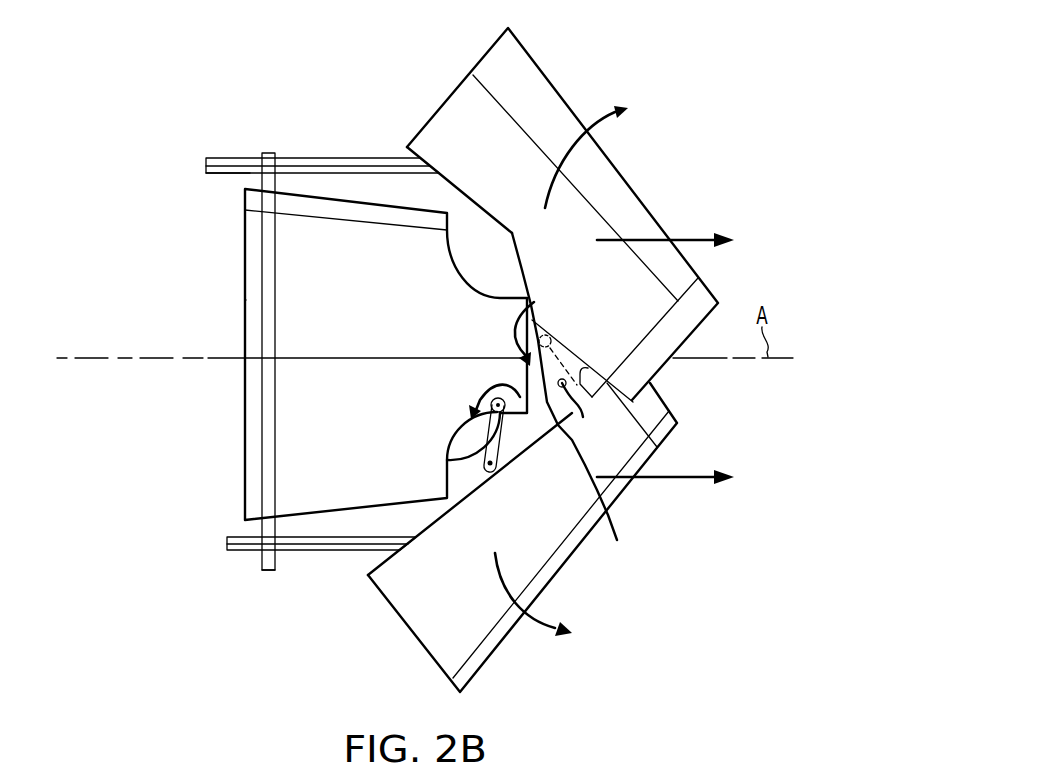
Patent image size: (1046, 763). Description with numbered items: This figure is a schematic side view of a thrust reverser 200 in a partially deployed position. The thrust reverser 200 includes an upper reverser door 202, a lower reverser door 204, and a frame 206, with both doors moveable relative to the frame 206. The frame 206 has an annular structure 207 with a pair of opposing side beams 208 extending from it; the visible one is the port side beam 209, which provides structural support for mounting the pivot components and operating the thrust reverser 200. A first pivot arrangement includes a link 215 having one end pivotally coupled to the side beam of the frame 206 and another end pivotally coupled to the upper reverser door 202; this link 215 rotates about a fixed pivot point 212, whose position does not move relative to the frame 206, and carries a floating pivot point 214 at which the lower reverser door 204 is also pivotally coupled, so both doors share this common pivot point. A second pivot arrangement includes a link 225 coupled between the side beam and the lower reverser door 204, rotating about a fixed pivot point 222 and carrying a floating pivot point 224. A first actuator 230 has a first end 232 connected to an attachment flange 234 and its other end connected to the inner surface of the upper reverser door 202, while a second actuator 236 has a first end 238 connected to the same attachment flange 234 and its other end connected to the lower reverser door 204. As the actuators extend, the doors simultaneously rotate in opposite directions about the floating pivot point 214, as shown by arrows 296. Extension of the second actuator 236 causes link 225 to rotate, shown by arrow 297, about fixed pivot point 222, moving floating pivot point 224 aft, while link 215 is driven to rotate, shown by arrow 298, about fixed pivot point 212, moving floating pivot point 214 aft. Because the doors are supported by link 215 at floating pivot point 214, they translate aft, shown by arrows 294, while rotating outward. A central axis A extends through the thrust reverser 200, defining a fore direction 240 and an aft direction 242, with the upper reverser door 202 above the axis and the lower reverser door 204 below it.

The thrust reverser 200 is at (705, 84).
The upper reverser door 202 is at (447, 106).
The lower reverser door 204 is at (410, 622).
The frame 206 is at (288, 258).
The annular structure 207 is at (330, 310).
The pair of opposing side beams 208 is at (506, 311).
The port side beam 209 is at (574, 402).
The fixed pivot point 212 is at (548, 336).
The floating pivot point 214 is at (583, 413).
The link 215 is at (570, 348).
The fixed pivot point 222 is at (511, 418).
The floating pivot point 224 is at (493, 468).
The link 225 is at (458, 447).
The first actuator 230 is at (360, 155).
The first end 232 is at (238, 136).
The attachment flange 234 is at (250, 178).
The second actuator 236 is at (330, 552).
The first end 238 is at (237, 588).
The fore direction 240 is at (90, 362).
The aft direction 242 is at (778, 360).
The arrows 294 is at (695, 240).
The arrows 296 is at (573, 140).
The arrow 297 is at (490, 384).
The arrow 298 is at (520, 336).